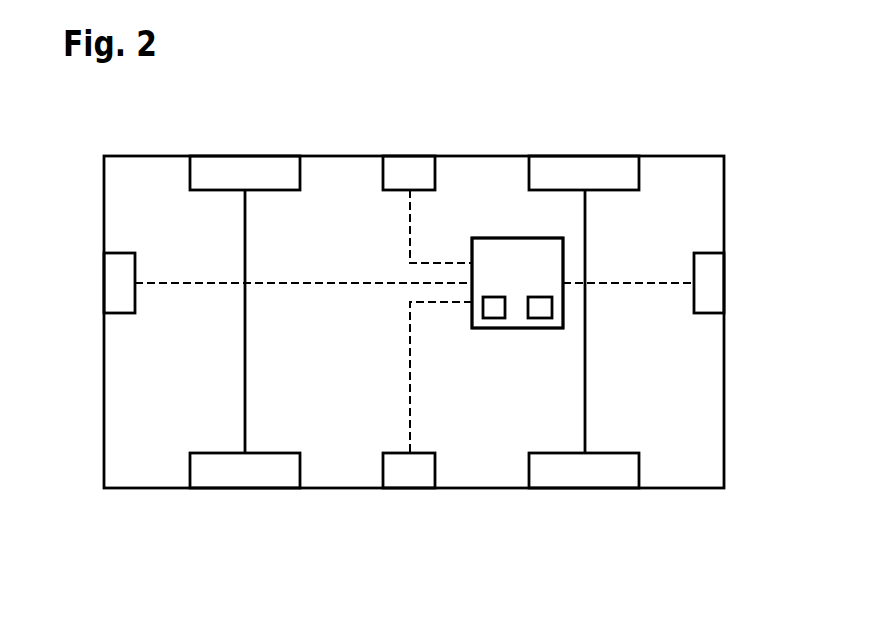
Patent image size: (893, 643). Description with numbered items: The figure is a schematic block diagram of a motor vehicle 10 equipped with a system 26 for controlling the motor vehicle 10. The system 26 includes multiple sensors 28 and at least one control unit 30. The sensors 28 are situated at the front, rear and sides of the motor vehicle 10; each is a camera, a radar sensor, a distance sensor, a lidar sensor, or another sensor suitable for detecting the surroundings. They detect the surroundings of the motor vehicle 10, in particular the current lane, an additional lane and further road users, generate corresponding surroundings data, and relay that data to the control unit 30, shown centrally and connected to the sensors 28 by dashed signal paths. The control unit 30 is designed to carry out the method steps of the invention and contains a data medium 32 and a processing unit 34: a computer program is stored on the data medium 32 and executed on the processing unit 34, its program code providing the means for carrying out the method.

The motor vehicle 10 is at (662, 156).
The system 26 is at (486, 228).
The sensors 28 is at (410, 172).
The control unit 30 is at (515, 233).
The data medium 32 is at (494, 308).
The processing unit 34 is at (539, 308).